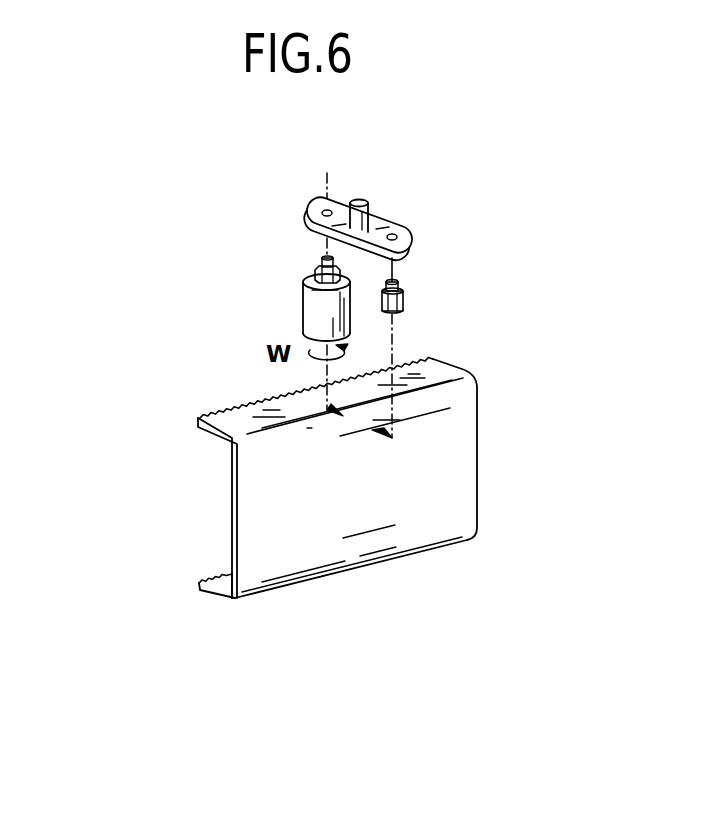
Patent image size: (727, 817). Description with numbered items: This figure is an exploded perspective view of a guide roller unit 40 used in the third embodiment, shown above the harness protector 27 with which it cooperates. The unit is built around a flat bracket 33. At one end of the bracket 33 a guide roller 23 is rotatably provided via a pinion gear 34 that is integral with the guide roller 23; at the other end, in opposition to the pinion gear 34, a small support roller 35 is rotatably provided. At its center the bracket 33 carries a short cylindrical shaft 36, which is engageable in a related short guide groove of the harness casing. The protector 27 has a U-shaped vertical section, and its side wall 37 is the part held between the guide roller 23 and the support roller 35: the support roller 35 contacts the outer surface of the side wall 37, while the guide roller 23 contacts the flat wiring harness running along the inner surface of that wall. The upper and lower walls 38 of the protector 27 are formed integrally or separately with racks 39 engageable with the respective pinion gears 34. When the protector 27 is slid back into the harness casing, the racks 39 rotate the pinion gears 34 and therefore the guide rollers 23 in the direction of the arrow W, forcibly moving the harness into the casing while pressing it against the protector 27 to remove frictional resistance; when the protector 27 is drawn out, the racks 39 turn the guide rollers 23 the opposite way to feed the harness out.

The guide roller 23 is at (302, 322).
The harness protector 27 is at (326, 507).
The flat bracket 33 is at (393, 217).
The pinion gear 34 is at (315, 268).
The support roller 35 is at (405, 299).
The short cylindrical shaft 36 is at (359, 200).
The side wall 37 is at (326, 507).
The upper and lower walls 38 is at (240, 418).
The rack 39 is at (208, 415).
The guide roller unit 40 is at (430, 233).